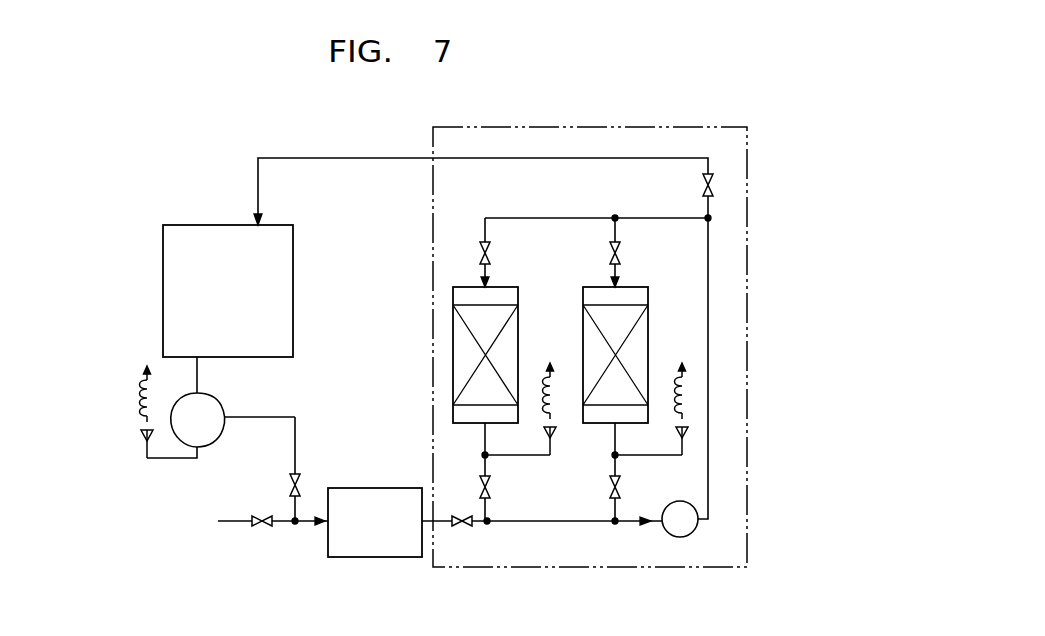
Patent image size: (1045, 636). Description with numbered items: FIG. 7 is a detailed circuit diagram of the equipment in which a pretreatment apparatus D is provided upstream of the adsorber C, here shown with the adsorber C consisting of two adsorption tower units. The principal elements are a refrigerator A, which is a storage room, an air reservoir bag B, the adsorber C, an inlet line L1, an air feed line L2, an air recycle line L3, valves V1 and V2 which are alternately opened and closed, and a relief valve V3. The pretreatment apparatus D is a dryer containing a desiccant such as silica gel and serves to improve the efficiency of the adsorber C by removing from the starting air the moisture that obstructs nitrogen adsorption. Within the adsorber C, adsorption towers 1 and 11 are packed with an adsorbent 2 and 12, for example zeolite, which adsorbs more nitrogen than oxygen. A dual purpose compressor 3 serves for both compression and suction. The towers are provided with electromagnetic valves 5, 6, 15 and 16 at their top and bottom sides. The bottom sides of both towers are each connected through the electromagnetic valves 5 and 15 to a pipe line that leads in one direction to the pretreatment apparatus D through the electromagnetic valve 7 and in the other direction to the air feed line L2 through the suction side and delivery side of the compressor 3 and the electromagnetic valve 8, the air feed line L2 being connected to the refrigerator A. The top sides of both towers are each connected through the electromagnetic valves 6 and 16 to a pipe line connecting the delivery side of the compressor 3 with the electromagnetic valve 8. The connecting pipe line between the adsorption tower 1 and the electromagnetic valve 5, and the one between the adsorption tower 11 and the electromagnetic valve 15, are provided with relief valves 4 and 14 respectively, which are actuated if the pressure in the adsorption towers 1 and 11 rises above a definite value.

The refrigerator A is at (273, 221).
The air reservoir bag B is at (220, 385).
The adsorber C is at (748, 335).
The pretreatment apparatus D is at (336, 557).
The inlet line L1 is at (220, 522).
The air feed line L2 is at (313, 158).
The air recycle line L3 is at (290, 437).
The valve V1 is at (290, 485).
The valve V2 is at (262, 527).
The relief valve V3 is at (142, 438).
The adsorption tower 1 is at (518, 302).
The adsorbent 2 is at (518, 340).
The compressor 3 is at (676, 537).
The relief valve 4 is at (556, 433).
The electromagnetic valve 5 is at (491, 487).
The electromagnetic valve 6 is at (478, 253).
The electromagnetic valve 7 is at (461, 513).
The electromagnetic valve 8 is at (702, 185).
The adsorption tower 11 is at (648, 302).
The adsorbent 12 is at (648, 340).
The relief valve 14 is at (688, 435).
The electromagnetic valve 15 is at (621, 487).
The electromagnetic valve 16 is at (612, 253).